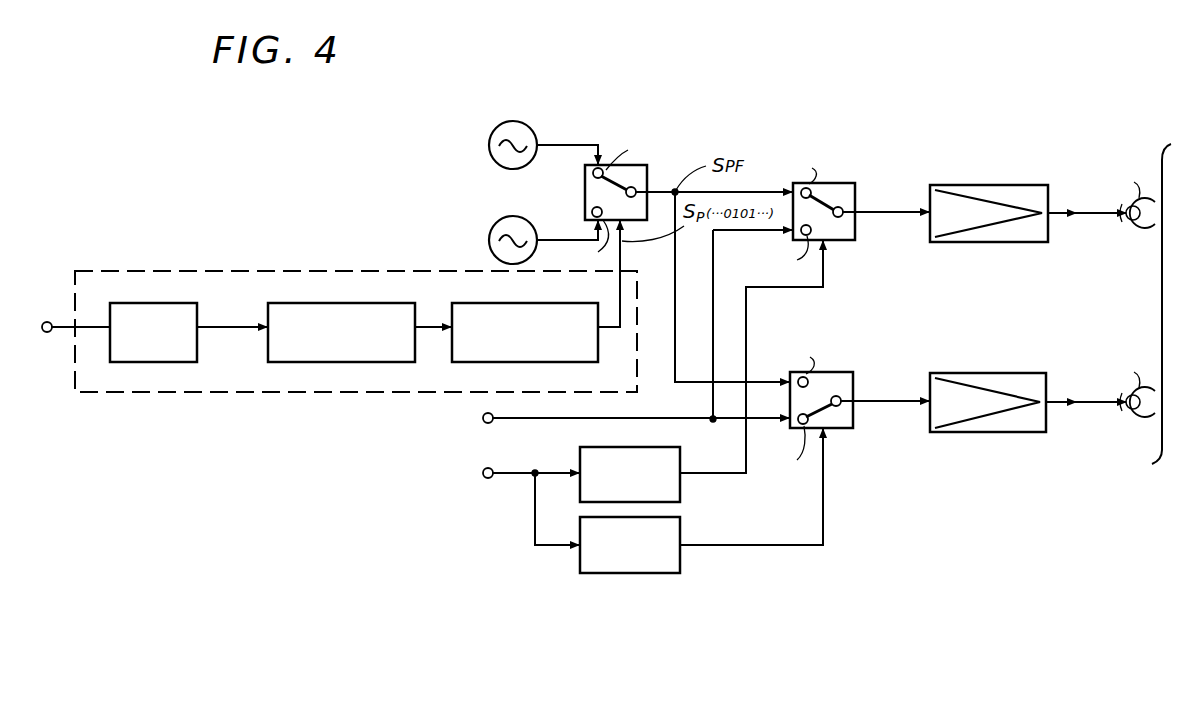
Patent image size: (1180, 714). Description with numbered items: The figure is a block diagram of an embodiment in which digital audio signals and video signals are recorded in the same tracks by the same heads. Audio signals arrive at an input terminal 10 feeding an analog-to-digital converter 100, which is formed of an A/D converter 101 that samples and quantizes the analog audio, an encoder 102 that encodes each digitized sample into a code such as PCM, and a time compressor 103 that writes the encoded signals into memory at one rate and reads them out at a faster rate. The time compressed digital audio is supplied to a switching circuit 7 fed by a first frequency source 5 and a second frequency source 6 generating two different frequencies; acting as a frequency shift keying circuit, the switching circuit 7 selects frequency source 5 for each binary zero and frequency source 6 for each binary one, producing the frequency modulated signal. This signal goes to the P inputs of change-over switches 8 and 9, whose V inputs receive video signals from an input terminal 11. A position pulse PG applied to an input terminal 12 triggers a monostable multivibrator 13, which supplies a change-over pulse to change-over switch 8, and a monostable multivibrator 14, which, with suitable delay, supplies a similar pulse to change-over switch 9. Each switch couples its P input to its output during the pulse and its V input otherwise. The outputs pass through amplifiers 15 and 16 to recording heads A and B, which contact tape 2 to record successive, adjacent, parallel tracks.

The tape 2 is at (1160, 306).
The first frequency source 5 is at (489, 145).
The second frequency source 6 is at (489, 240).
The switching circuit 7 is at (647, 166).
The change-over switch 8 is at (857, 186).
The change-over switch 9 is at (853, 375).
The input terminal 10 is at (32, 330).
The input terminal 11 is at (493, 423).
The input terminal 12 is at (493, 479).
The monostable multivibrator 13 is at (682, 456).
The monostable multivibrator 14 is at (682, 526).
The amplifier 15 is at (1005, 185).
The amplifier 16 is at (1012, 373).
The analog-to-digital converter 100 is at (246, 270).
The A/D converter 101 is at (178, 363).
The encoder 102 is at (358, 363).
The time compressor 103 is at (544, 363).